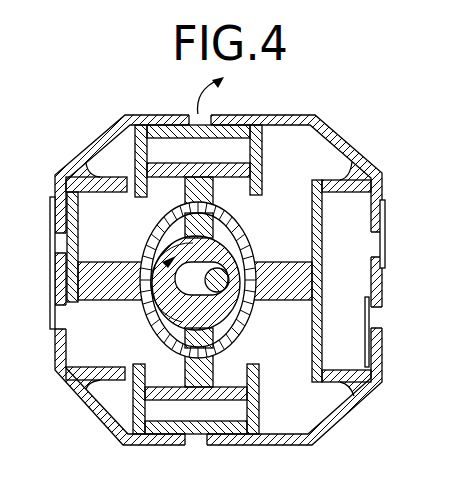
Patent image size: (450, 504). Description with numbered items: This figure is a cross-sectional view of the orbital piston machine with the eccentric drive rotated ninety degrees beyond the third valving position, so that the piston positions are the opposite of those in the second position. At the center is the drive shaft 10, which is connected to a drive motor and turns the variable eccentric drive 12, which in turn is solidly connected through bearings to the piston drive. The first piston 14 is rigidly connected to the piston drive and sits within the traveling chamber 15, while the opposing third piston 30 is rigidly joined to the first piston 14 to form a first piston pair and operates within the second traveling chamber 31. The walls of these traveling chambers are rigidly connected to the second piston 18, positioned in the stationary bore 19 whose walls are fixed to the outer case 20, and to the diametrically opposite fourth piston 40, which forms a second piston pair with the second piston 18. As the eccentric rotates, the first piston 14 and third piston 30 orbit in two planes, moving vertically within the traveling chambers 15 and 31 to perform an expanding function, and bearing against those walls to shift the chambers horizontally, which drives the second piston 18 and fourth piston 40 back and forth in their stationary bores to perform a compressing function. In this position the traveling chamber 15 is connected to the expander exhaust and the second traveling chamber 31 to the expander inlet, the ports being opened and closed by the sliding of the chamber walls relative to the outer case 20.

The drive shaft 10 is at (226, 278).
The variable eccentric drive 12 is at (155, 308).
The first piston 14 is at (232, 180).
The traveling bore (chamber) 15 is at (238, 152).
The second piston 18 is at (317, 222).
The stationary bore 19 is at (350, 243).
The outer case 20 is at (364, 174).
The third piston 30 is at (230, 375).
The second traveling chamber 31 is at (238, 415).
The fourth piston 40 is at (72, 227).